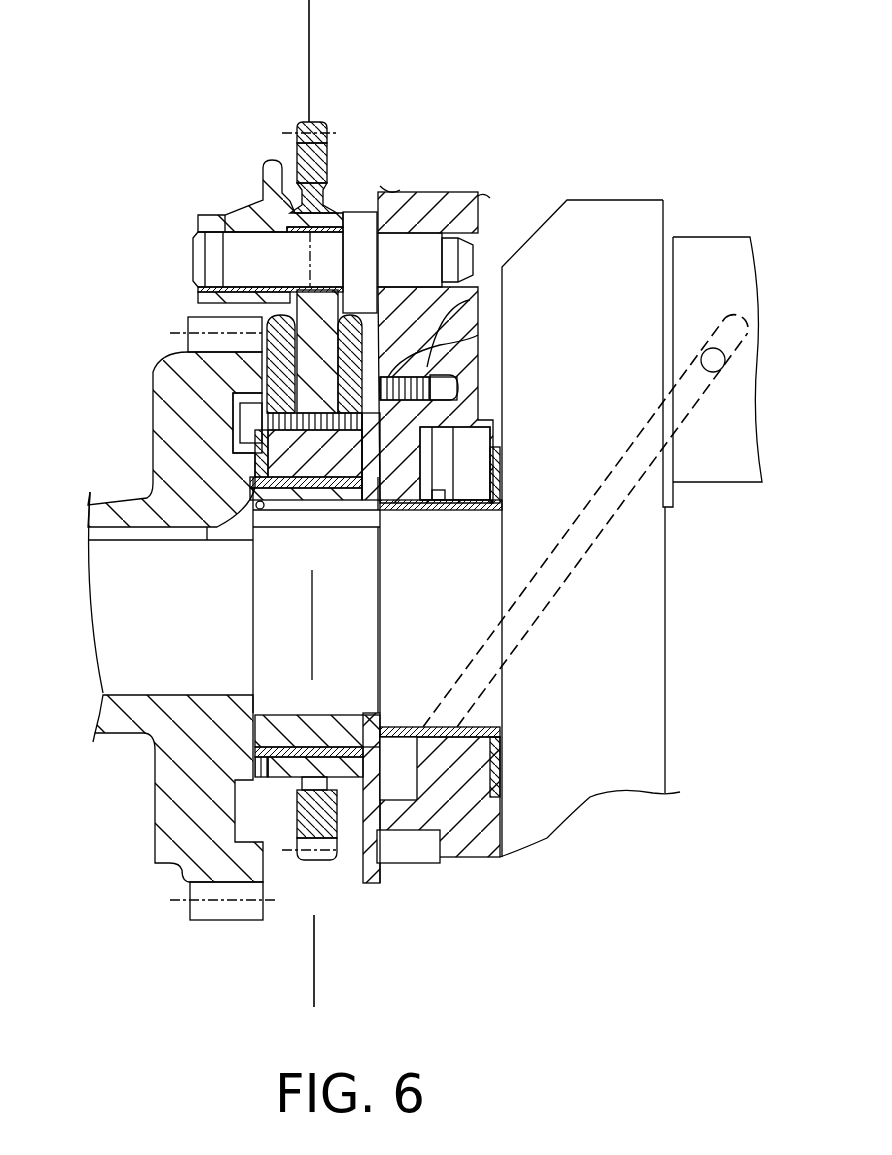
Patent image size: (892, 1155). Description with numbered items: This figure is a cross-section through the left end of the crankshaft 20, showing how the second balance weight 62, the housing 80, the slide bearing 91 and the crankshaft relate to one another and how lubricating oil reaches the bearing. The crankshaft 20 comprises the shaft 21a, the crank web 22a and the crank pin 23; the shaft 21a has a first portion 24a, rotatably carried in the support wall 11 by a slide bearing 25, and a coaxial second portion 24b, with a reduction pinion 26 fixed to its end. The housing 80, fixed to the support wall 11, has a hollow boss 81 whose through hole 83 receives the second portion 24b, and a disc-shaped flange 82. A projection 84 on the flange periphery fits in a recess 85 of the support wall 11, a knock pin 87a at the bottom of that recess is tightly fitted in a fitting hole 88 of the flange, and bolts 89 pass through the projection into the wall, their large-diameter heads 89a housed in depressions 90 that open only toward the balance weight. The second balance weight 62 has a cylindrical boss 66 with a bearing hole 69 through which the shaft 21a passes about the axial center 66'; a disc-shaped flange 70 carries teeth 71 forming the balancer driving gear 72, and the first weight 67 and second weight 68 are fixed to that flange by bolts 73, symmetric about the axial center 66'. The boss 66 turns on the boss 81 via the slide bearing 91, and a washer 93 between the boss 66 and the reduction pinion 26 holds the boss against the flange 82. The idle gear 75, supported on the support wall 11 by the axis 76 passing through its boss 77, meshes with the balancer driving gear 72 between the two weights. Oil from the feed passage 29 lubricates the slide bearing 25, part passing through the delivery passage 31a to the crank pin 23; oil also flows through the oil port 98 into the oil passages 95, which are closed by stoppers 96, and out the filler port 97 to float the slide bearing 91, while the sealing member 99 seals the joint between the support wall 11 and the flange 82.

The axial center 66' is at (341, 61).
The idle gear 75 is at (308, 118).
The axis 76 is at (235, 243).
The boss 77 is at (200, 293).
The second balance weight 62 is at (352, 316).
The support wall 11 is at (442, 215).
The second weight 68 is at (500, 288).
The large-diameter head 89a is at (480, 323).
The projection 84 is at (395, 372).
The bolt 89 is at (440, 388).
The depression 90 is at (420, 425).
The feed passage 29 is at (450, 468).
The oil port 98 is at (385, 512).
The sealing member 99 is at (382, 530).
The oil passage 95 is at (378, 560).
The crankshaft 20 is at (649, 185).
The crank web 22a is at (650, 690).
The crank pin 23 is at (718, 250).
The delivery passage 31a is at (618, 515).
The first weight 67 is at (195, 365).
The balancer driving gear 72 is at (268, 415).
The bolt 73 is at (300, 437).
The boss 66 is at (238, 387).
The boss 81 is at (287, 528).
The filler port 97 is at (312, 527).
The slide bearing 91 is at (345, 528).
The washer 93 is at (233, 493).
The stopper 96 is at (240, 537).
The shaft 21a is at (100, 616).
The second portion 24b is at (265, 660).
The first portion 24a is at (448, 656).
The through hole 83 is at (375, 715).
The bearing hole 69 is at (308, 715).
The housing 80 is at (383, 735).
The flange 82 is at (358, 880).
The slide bearing 25 is at (477, 727).
The recess 85 is at (482, 803).
The knock pin 87a is at (415, 855).
The fitting hole 88 is at (405, 860).
The flange 70 is at (297, 808).
The teeth 71 is at (315, 865).
The reduction pinion 26 is at (172, 822).